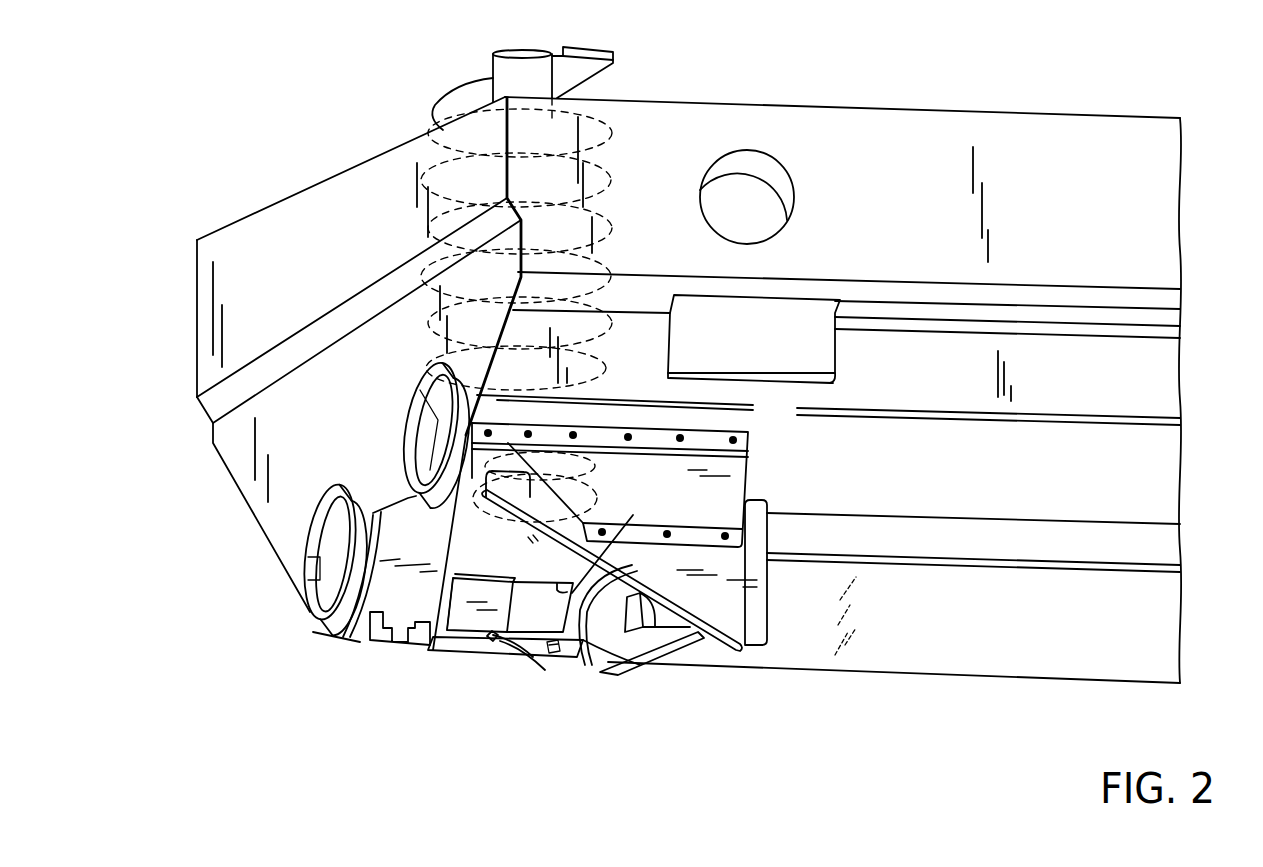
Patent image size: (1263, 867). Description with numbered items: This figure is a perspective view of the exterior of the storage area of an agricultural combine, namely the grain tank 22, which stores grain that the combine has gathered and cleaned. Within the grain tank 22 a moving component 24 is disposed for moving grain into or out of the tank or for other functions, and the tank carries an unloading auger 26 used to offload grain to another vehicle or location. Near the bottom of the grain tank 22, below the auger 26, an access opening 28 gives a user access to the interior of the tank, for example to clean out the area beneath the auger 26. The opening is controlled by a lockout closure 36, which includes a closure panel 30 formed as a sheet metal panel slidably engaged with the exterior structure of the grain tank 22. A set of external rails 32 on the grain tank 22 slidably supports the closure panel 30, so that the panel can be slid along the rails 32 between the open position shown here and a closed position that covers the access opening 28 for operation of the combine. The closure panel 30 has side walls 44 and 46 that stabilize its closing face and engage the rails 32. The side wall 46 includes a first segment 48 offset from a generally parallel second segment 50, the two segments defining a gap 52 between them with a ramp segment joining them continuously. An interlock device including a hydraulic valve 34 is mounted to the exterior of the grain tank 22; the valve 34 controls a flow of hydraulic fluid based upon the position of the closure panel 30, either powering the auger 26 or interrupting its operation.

The grain tank 22 is at (882, 97).
The moving component 24 is at (467, 55).
The unloading auger 26 is at (443, 108).
The access opening 28 is at (527, 612).
The closure panel 30 is at (458, 621).
The external rails 32 is at (543, 582).
The hydraulic valve 34 is at (619, 549).
The lockout closure 36 is at (497, 645).
The side wall 44 is at (473, 573).
The side wall 46 is at (432, 650).
The first segment 48 is at (472, 638).
The second segment 50 is at (493, 635).
The gap 52 is at (500, 641).